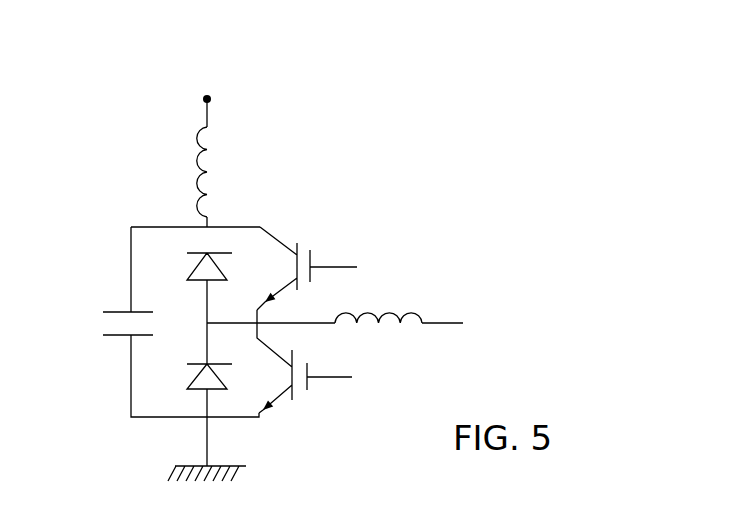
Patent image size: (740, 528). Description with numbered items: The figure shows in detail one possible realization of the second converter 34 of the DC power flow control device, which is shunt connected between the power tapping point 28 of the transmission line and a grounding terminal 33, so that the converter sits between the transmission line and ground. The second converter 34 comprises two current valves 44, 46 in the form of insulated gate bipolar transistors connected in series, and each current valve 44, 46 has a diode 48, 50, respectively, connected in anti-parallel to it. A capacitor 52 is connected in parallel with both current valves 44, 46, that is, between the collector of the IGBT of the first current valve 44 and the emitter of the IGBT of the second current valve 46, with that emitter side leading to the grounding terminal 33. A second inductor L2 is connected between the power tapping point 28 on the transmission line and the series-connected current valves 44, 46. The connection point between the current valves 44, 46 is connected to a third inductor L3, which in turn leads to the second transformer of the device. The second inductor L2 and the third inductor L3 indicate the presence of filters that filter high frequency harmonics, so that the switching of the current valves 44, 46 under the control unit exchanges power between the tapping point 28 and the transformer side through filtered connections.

The power tapping point 28 is at (207, 99).
The grounding terminal 33 is at (202, 457).
The second converter 34 is at (452, 295).
The first current valve 44 is at (307, 256).
The second current valve 46 is at (304, 379).
The diode 48 is at (188, 271).
The diode 50 is at (188, 381).
The capacitor 52 is at (103, 331).
The second inductor L2 is at (181, 172).
The third inductor L3 is at (378, 301).